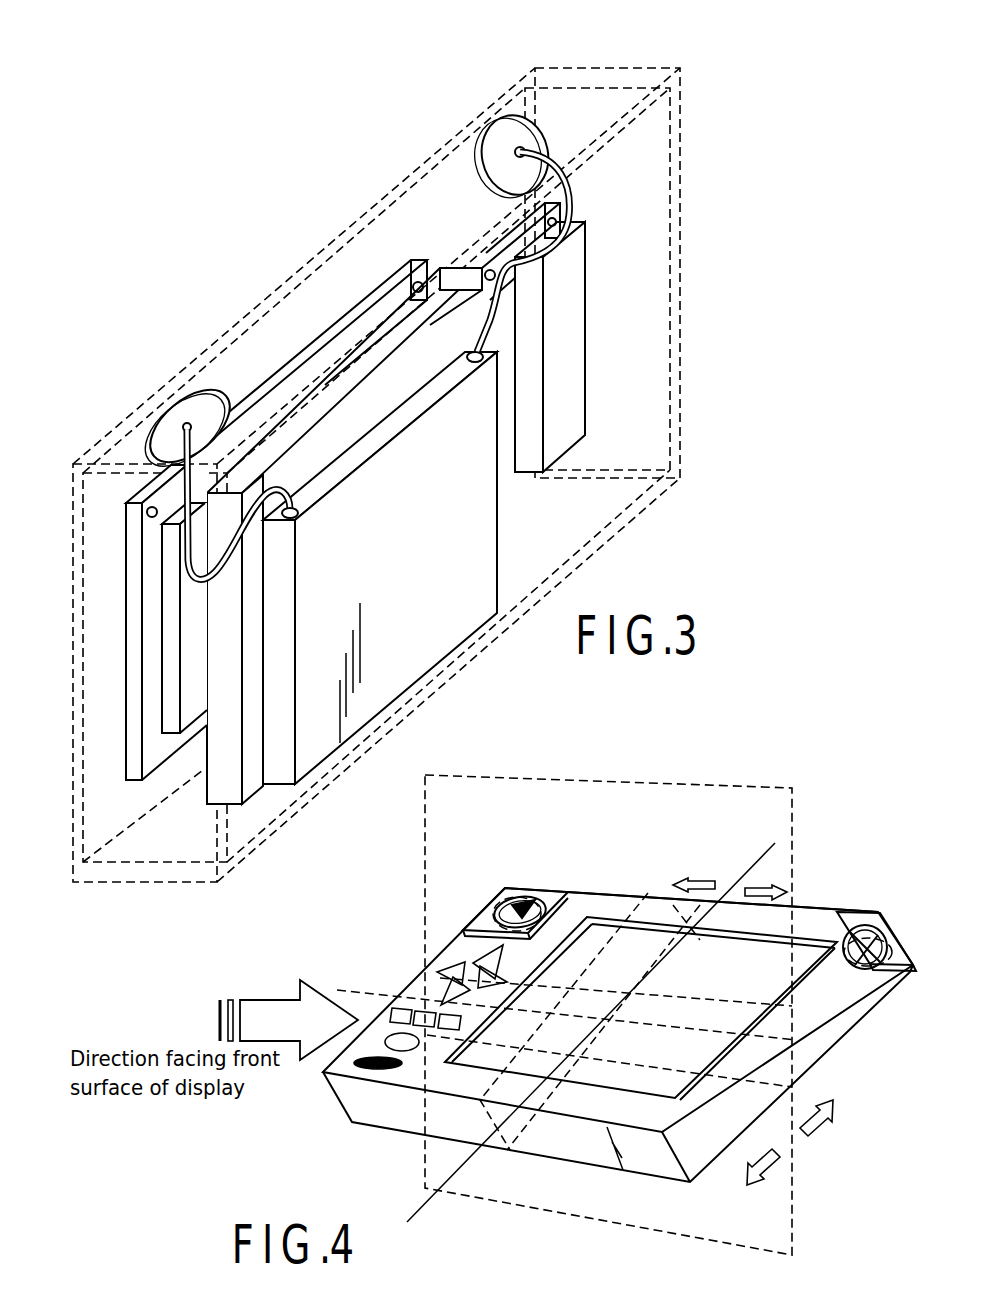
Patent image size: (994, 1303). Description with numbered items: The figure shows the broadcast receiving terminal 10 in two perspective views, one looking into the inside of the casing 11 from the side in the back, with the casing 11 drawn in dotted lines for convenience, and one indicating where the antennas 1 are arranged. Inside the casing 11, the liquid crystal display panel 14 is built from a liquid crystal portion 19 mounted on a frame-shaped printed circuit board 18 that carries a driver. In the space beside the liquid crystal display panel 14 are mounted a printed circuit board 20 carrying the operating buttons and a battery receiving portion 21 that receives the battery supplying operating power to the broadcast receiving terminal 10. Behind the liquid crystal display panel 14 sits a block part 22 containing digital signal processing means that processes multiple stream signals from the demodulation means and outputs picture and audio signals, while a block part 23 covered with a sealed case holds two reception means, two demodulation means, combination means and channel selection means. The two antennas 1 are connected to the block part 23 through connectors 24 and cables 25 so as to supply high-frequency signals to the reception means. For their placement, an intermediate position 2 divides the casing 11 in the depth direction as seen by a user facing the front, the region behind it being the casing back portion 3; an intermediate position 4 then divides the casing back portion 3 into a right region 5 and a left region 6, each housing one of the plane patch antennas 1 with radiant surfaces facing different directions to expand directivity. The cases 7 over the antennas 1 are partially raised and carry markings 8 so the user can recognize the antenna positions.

In FIG. 3, the antenna 1 is at (190, 403).
In FIG. 4, the antenna 1 is at (500, 918).
In FIG. 4, the intermediate position 2 is at (837, 1048).
In FIG. 4, the casing back portion 3 is at (790, 1142).
In FIG. 4, the intermediate position 4 is at (566, 1016).
In FIG. 4, the right region 5 is at (766, 876).
In FIG. 4, the left region 6 is at (694, 869).
In FIG. 4, the case 7 is at (503, 900).
In FIG. 4, the marking 8 is at (525, 895).
In FIG. 3, the broadcast receiving terminal 10 is at (514, 70).
In FIG. 4, the broadcast receiving terminal 10 is at (336, 1109).
In FIG. 3, the casing 11 is at (398, 173).
In FIG. 4, the casing 11 is at (380, 1123).
In FIG. 3, the liquid crystal display panel 14 is at (357, 310).
In FIG. 4, the liquid crystal display panel 14 is at (807, 948).
In FIG. 3, the printed circuit board 18 is at (124, 683).
In FIG. 3, the liquid crystal portion 19 is at (170, 733).
In FIG. 3, the printed circuit board 20 is at (503, 262).
In FIG. 3, the battery receiving portion 21 is at (578, 263).
In FIG. 3, the block part 22 is at (203, 803).
In FIG. 3, the block part 23 is at (455, 642).
In FIG. 3, the connector 24 is at (297, 517).
In FIG. 3, the cable 25 is at (240, 548).